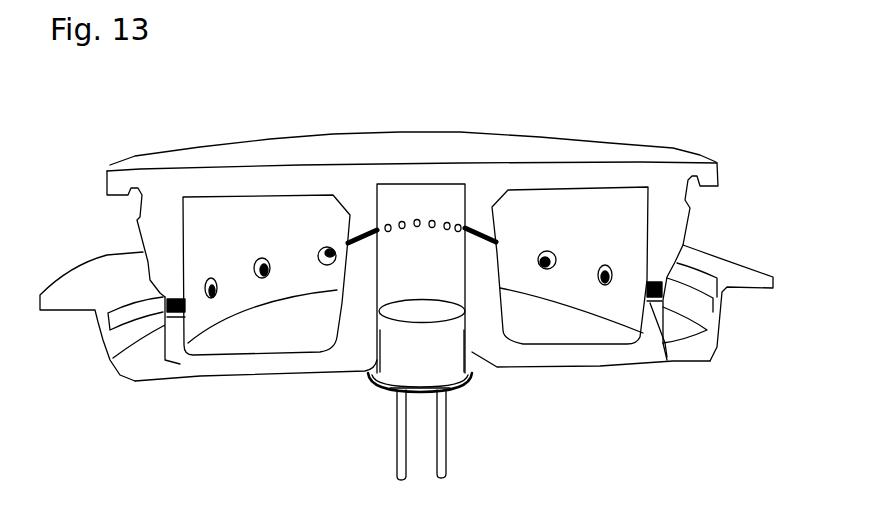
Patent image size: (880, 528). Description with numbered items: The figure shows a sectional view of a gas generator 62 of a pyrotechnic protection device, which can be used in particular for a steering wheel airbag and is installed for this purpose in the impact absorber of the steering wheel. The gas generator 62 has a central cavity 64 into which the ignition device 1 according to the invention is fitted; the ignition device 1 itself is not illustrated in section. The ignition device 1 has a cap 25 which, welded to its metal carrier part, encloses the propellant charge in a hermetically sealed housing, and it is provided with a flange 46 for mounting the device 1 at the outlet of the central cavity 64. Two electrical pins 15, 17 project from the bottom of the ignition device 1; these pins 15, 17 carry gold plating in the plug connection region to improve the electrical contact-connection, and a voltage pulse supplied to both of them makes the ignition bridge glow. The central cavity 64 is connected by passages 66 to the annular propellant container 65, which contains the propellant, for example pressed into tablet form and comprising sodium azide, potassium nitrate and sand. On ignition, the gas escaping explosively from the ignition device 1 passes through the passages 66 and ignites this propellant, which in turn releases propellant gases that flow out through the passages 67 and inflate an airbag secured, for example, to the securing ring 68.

The ignition device 1 is at (460, 397).
The pin 15 is at (397, 447).
The further pin 17 is at (440, 436).
The cap 25 is at (437, 360).
The flange 46 is at (374, 383).
The gas generator 62 is at (357, 80).
The central cavity 64 is at (423, 203).
The annular propellant container 65 is at (237, 233).
The passages 66 is at (467, 227).
The passages 67 is at (670, 363).
The securing ring 68 is at (77, 310).